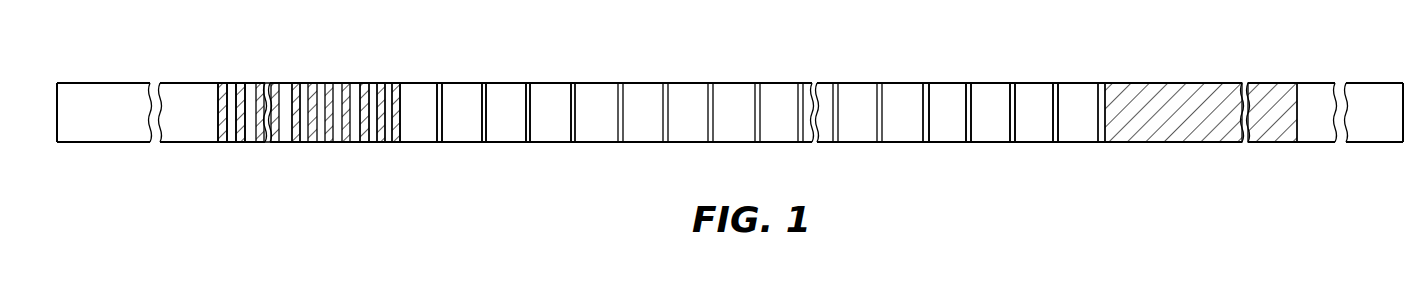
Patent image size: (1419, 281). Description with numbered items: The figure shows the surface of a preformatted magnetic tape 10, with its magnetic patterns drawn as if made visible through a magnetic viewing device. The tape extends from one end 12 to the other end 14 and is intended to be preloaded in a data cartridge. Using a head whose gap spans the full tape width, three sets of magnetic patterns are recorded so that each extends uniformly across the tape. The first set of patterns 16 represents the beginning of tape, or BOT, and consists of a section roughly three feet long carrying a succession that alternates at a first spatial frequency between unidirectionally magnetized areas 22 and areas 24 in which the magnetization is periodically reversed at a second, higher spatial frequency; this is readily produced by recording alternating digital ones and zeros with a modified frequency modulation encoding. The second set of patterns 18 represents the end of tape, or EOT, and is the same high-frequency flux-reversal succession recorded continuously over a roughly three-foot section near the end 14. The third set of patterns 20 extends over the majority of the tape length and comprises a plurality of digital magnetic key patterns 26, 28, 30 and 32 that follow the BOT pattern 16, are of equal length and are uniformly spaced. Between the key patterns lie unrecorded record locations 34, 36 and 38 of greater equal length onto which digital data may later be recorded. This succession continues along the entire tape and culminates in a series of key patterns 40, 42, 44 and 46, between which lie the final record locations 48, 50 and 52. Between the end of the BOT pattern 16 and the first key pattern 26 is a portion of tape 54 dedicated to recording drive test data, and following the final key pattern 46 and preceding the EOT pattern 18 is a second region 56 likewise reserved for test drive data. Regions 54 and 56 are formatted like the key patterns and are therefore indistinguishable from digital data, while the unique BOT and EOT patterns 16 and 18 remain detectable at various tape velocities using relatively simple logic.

The magnetic tape 10 is at (357, 70).
The end 12 is at (58, 128).
The end 14 is at (1403, 123).
The first set of patterns 16 is at (400, 150).
The second set of patterns 18 is at (1105, 153).
The third set of patterns 20 is at (1060, 151).
The unidirectionally magnetized areas 22 is at (291, 92).
The areas of periodically reversed magnetization 24 is at (241, 118).
The key pattern 26 is at (440, 83).
The key pattern 28 is at (484, 83).
The key pattern 30 is at (528, 83).
The key pattern 32 is at (573, 83).
The record location 34 is at (474, 126).
The record location 36 is at (519, 126).
The record location 38 is at (564, 126).
The key pattern 40 is at (927, 83).
The key pattern 42 is at (969, 83).
The key pattern 44 is at (1013, 83).
The key pattern 46 is at (1056, 83).
The final record location 48 is at (958, 126).
The final record location 50 is at (1004, 126).
The final record location 52 is at (1048, 126).
The portion of tape 54 is at (431, 126).
The second region 56 is at (1092, 126).